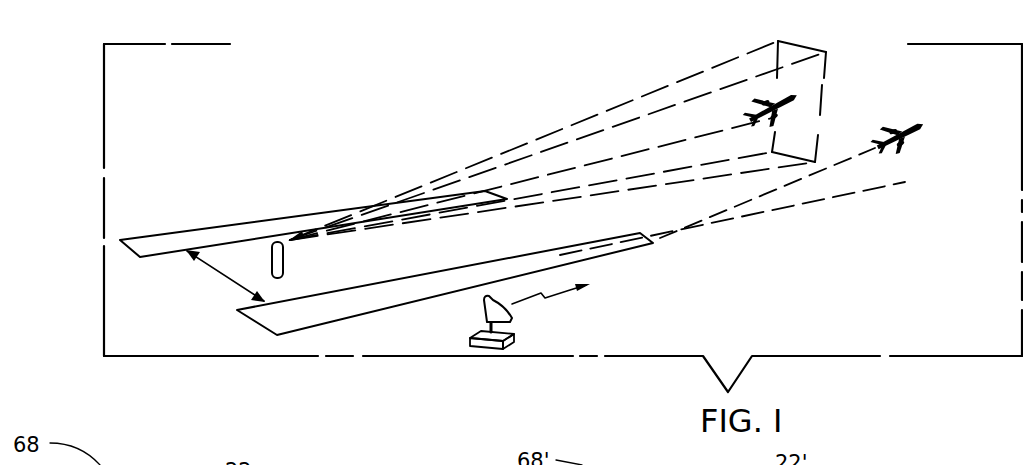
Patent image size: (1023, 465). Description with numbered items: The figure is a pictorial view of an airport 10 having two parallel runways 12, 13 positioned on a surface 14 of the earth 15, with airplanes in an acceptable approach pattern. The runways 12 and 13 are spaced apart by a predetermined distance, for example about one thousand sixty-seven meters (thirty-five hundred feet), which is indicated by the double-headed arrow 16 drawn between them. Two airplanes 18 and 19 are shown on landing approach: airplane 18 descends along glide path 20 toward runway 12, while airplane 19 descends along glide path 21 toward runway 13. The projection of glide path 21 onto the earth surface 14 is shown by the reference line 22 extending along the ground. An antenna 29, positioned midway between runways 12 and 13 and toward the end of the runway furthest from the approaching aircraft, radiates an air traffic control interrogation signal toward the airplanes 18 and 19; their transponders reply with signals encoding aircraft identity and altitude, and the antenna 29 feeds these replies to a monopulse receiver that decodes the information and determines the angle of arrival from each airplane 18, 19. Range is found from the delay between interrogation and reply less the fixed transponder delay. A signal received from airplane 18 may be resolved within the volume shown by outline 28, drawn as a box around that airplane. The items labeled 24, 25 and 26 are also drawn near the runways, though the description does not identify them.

The airport 10 is at (245, 134).
The runway 12 is at (262, 220).
The runway 13 is at (446, 268).
The surface 14 is at (740, 308).
The earth 15 is at (774, 308).
The arrow 16 is at (225, 278).
The airplane 18 is at (795, 93).
The airplane 19 is at (918, 119).
The glide path 20 is at (637, 157).
The glide path 21 is at (828, 163).
The reference line 22 is at (846, 201).
The sensor line of sight 24 is at (560, 299).
The sensor head 25 is at (512, 320).
The sensor base 26 is at (470, 334).
The outline 28 is at (832, 49).
The antenna 29 is at (285, 262).